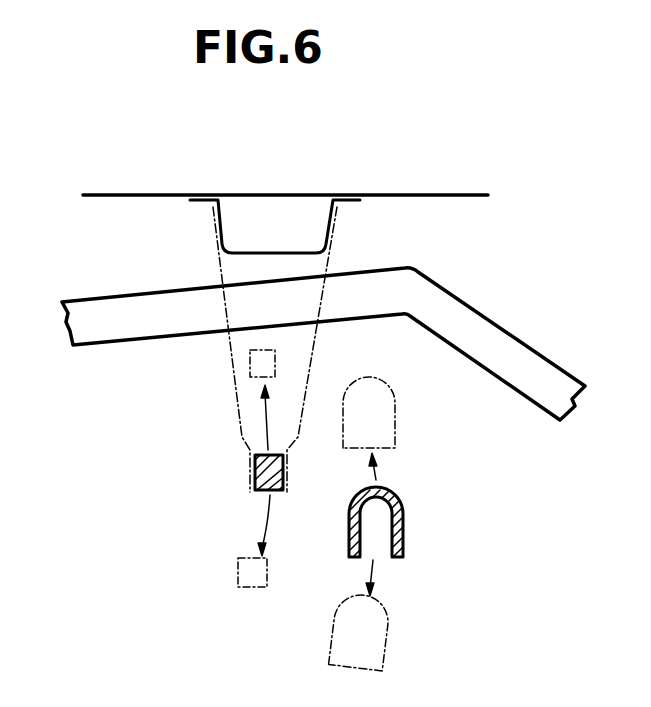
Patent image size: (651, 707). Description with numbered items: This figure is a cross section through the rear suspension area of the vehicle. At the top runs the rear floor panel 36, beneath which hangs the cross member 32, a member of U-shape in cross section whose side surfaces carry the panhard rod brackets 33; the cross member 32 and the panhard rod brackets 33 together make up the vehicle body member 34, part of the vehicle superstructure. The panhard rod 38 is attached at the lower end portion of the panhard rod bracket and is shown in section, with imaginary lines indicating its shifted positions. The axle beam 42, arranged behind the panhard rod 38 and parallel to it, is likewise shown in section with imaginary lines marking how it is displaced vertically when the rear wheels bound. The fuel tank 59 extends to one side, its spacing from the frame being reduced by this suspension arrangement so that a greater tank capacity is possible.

The cross member 32 is at (219, 232).
The panhard rod bracket 33 is at (220, 273).
The vehicle body member 34 is at (204, 345).
The rear floor panel 36 is at (414, 194).
The panhard rod 38 is at (249, 372).
The axle beam 42 is at (388, 620).
The fuel tank 59 is at (487, 307).